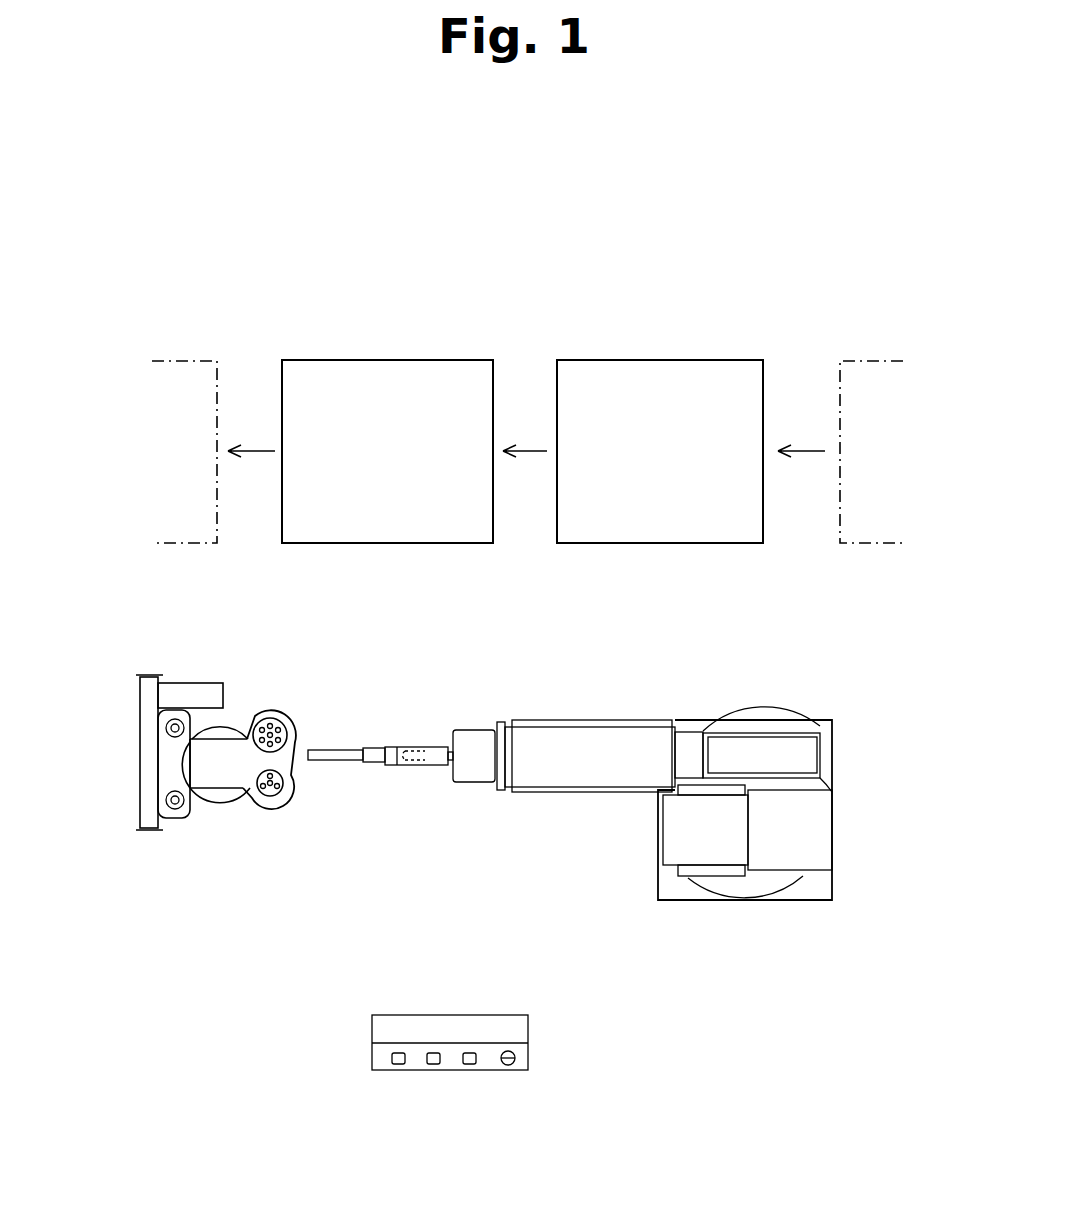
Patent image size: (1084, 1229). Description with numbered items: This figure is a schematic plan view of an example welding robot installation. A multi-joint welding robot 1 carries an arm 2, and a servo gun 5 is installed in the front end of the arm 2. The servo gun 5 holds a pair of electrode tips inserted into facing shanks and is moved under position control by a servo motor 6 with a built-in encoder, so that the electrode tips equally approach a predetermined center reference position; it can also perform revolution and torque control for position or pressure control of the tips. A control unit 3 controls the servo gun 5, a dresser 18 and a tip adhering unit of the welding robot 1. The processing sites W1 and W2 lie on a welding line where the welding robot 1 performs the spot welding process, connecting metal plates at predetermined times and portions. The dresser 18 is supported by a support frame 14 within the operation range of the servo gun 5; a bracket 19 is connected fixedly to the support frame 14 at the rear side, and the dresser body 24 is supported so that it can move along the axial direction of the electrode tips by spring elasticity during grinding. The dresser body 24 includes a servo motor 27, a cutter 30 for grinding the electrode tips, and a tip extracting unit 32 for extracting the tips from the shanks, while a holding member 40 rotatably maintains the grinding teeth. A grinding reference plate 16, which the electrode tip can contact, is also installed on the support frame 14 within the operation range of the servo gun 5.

The multi-joint welding robot 1 is at (746, 688).
The arm 2 is at (573, 750).
The control unit 3 is at (507, 1030).
The servo gun 5 is at (421, 723).
The servo motor 6 is at (405, 768).
The support frame 14 is at (147, 698).
The grinding reference plate 16 is at (197, 697).
The dresser 18 is at (251, 830).
The bracket 19 is at (163, 763).
The dresser body 24 is at (215, 802).
The servo motor 27 is at (203, 775).
The cutter 30 is at (282, 800).
The tip extracting unit 32 is at (295, 723).
The holding member 40 is at (295, 723).
The processing site W1 is at (399, 318).
The processing site W2 is at (639, 318).